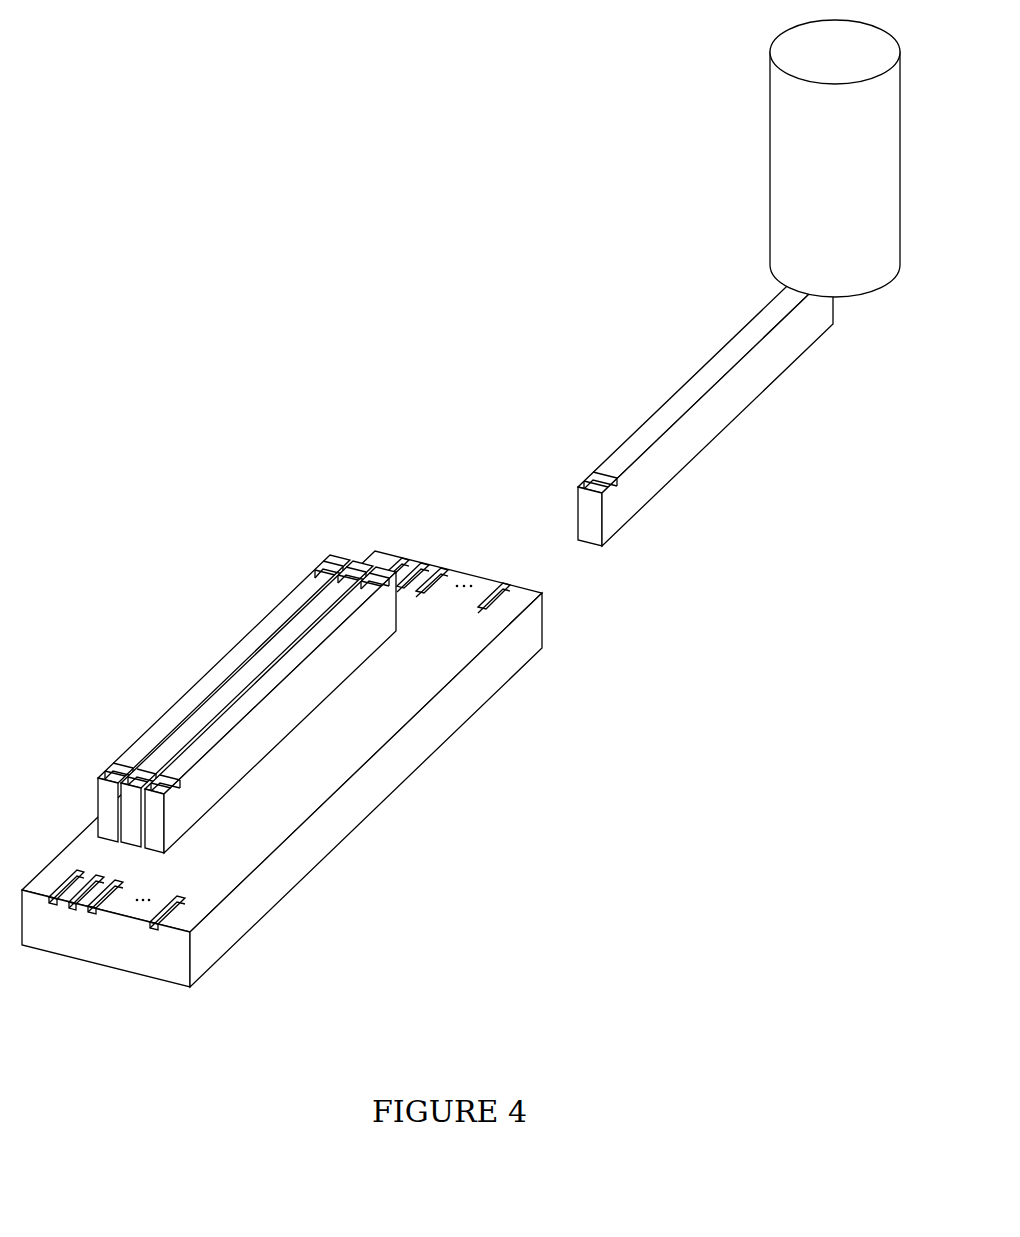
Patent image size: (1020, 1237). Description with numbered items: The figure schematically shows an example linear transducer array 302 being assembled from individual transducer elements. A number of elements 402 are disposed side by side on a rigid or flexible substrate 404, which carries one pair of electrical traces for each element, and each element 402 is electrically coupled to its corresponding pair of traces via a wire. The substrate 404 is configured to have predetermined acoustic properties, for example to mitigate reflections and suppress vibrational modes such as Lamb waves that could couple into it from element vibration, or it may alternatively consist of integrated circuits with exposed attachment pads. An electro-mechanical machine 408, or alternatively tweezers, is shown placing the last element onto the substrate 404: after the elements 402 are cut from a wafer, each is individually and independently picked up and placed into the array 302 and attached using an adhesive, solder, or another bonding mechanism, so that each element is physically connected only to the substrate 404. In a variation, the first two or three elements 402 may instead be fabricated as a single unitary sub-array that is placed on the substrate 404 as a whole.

The transducer array 302 is at (311, 752).
The elements 402 is at (247, 650).
The substrate 404 is at (493, 697).
The electro-mechanical machine 408 is at (770, 76).